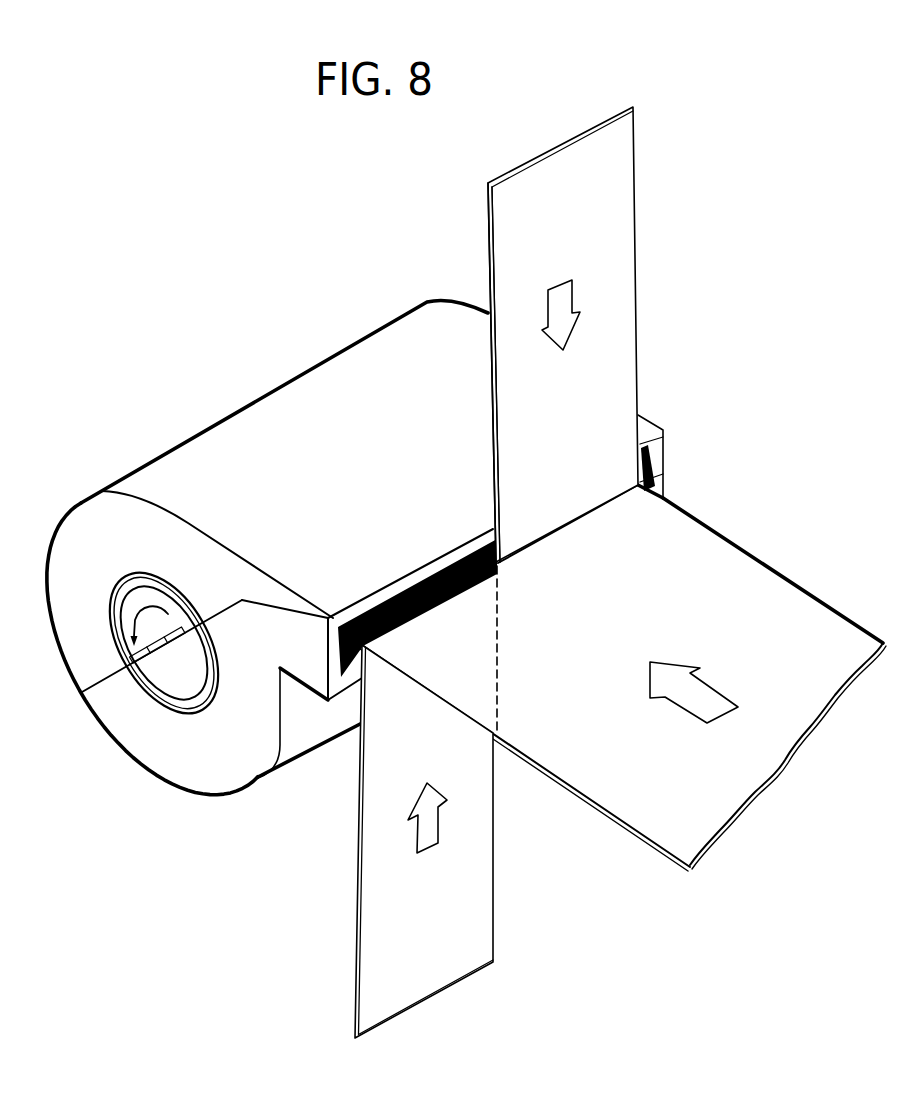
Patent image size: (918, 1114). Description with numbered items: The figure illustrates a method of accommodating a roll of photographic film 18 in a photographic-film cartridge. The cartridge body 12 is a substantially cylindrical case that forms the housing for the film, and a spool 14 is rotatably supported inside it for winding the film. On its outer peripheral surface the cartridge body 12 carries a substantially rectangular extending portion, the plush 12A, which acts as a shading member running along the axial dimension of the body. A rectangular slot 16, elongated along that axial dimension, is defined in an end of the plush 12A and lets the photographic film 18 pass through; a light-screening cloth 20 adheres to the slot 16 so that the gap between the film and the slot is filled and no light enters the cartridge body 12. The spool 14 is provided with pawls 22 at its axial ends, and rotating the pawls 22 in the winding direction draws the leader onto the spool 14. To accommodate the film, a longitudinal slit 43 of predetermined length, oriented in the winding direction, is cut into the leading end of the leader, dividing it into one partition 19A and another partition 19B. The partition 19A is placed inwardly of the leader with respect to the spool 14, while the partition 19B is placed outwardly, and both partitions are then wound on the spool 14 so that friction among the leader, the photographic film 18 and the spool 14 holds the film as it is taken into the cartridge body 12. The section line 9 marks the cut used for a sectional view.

The section line 9- 9 is at (207, 348).
The cartridge body 12 is at (299, 422).
The plush 12A is at (327, 600).
The spool 14 is at (177, 699).
The slot 16 is at (650, 455).
The photographic film 18 is at (788, 610).
The partition 19A is at (477, 855).
The partition 19B is at (623, 241).
The light-screening cloth 20 is at (653, 477).
The pawls 22 is at (128, 674).
The slit 43 is at (488, 257).